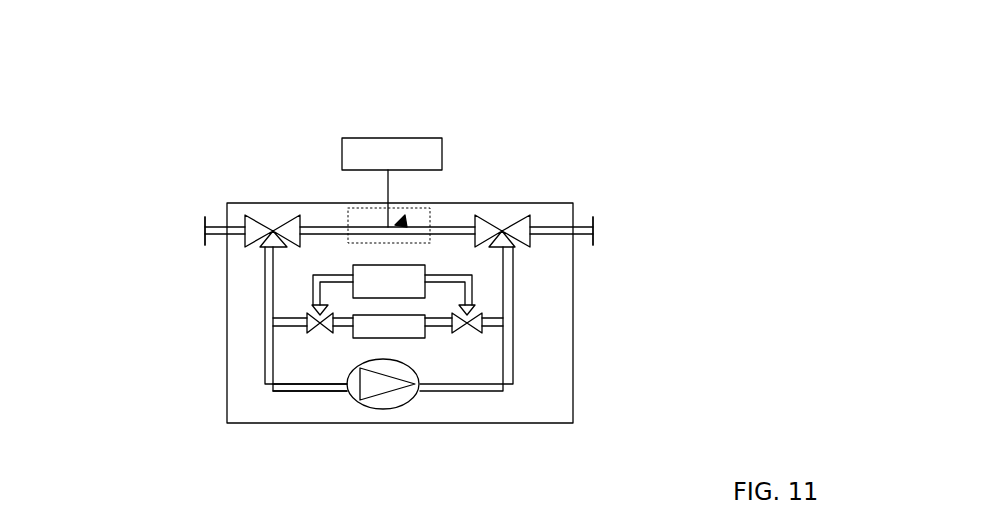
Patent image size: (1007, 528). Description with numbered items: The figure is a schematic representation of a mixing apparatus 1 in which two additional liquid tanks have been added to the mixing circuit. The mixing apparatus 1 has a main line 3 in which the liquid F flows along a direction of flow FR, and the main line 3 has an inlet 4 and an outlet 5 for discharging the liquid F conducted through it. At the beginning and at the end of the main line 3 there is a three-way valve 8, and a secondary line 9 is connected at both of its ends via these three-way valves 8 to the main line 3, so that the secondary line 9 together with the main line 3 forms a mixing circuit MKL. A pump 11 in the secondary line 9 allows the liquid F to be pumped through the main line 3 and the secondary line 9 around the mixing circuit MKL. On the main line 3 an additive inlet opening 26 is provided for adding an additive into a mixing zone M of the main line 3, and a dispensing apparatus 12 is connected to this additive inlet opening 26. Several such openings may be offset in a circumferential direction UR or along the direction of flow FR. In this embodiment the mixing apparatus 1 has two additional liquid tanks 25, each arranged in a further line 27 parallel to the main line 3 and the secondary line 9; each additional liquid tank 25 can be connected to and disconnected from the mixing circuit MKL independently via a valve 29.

The mixing apparatus 1 is at (118, 100).
The main line 3 is at (317, 226).
The inlet 4 is at (605, 228).
The outlet 5 is at (195, 233).
The three-way valve 8 is at (273, 215).
The secondary line 9 is at (290, 392).
The pump 11 is at (390, 409).
The dispensing apparatus 12 is at (400, 148).
The additional liquid tank 25 is at (418, 291).
The additive inlet opening 26 is at (406, 214).
The further line 27 is at (277, 321).
The valve 29 is at (417, 324).
The liquid F is at (334, 227).
The mixing zone M is at (507, 213).
The direction of flow FR is at (823, 228).
The mixing circuit MKL is at (552, 375).
The circumferential direction UR is at (854, 217).